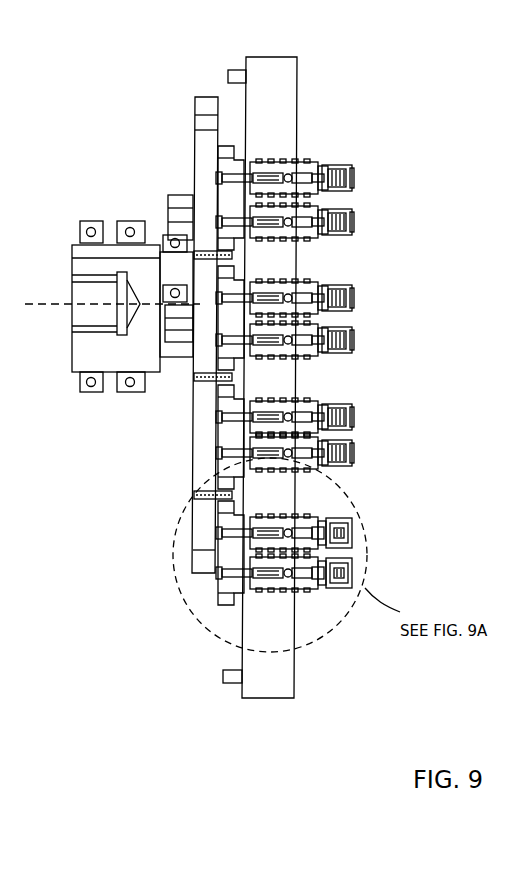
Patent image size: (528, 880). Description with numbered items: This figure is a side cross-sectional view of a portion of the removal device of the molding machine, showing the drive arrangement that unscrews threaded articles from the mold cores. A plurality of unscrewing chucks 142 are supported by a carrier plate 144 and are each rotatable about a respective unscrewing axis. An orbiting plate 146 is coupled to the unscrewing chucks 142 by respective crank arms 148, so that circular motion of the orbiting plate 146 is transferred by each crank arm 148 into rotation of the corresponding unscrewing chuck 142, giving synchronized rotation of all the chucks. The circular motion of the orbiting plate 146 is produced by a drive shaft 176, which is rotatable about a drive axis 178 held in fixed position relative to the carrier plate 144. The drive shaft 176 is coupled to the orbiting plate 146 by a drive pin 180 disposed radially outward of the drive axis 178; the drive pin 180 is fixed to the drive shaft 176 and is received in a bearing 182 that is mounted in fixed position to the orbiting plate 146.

The unscrewing chuck 142 is at (345, 527).
The carrier plate 144 is at (273, 690).
The orbiting plate 146 is at (205, 565).
The crank arm 148 is at (232, 506).
The drive shaft 176 is at (108, 262).
The drive axis 178 is at (45, 302).
The drive pin 180 is at (174, 262).
The bearing 182 is at (177, 322).